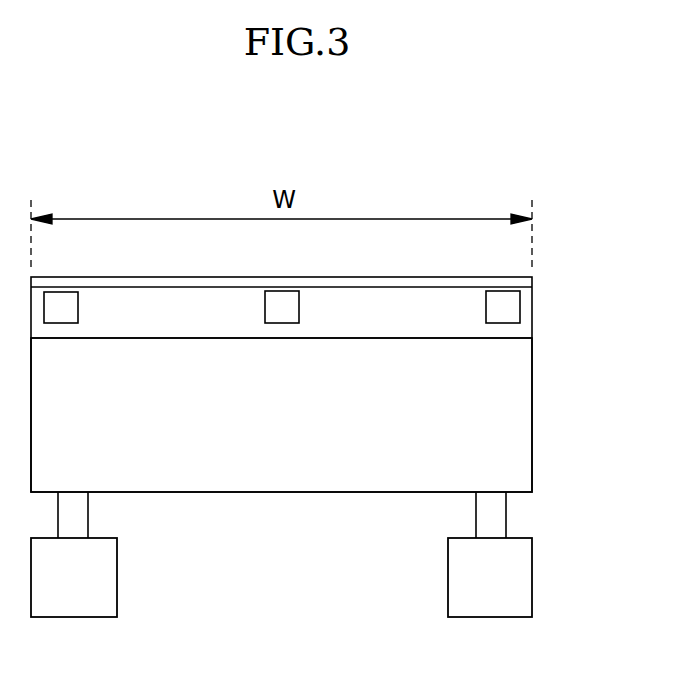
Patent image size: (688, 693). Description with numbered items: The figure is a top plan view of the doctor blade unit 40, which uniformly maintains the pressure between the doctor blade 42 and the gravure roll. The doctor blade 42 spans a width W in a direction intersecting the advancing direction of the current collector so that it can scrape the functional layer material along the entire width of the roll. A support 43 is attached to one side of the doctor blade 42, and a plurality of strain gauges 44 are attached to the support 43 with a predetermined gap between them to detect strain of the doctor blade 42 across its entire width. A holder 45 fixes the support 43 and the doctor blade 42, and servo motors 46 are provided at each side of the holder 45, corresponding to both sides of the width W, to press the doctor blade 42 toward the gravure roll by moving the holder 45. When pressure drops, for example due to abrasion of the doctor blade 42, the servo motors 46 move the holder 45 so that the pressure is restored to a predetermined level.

The doctor blade unit 40 is at (275, 145).
The doctor blade 42 is at (527, 279).
The support 43 is at (527, 327).
The strain gauge 44 is at (510, 306).
The holder 45 is at (519, 418).
The servo motor 46 is at (513, 578).